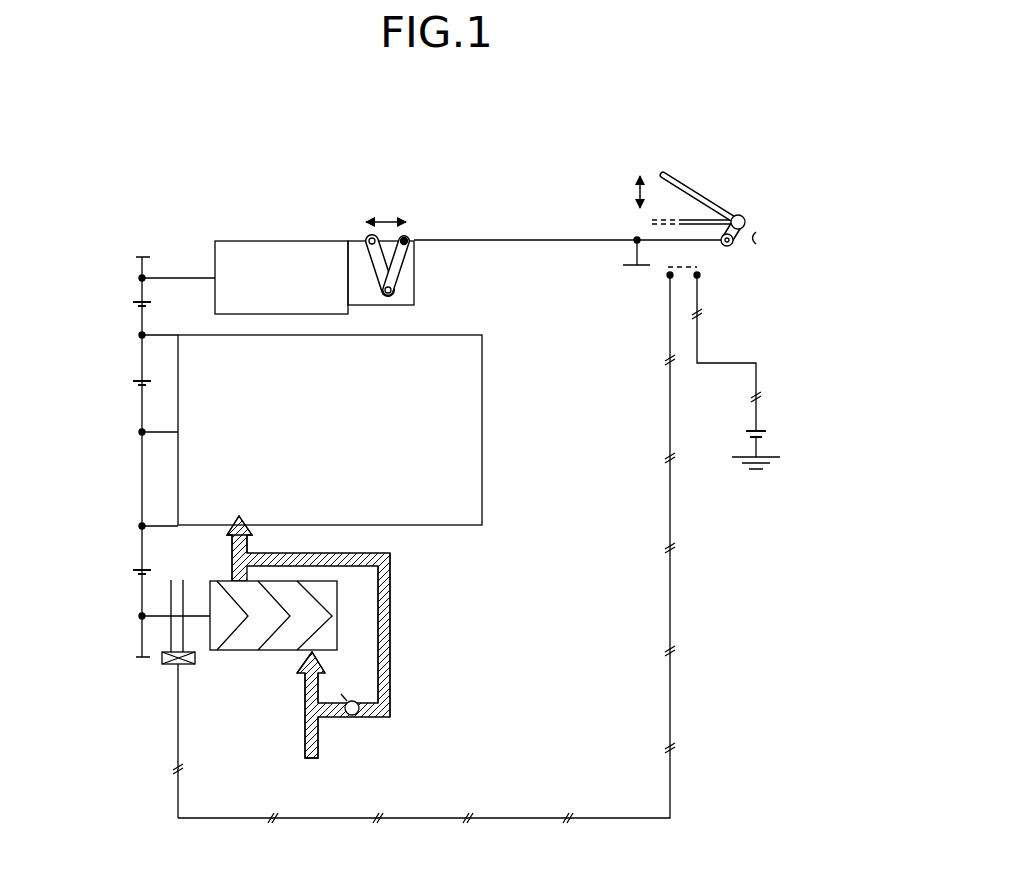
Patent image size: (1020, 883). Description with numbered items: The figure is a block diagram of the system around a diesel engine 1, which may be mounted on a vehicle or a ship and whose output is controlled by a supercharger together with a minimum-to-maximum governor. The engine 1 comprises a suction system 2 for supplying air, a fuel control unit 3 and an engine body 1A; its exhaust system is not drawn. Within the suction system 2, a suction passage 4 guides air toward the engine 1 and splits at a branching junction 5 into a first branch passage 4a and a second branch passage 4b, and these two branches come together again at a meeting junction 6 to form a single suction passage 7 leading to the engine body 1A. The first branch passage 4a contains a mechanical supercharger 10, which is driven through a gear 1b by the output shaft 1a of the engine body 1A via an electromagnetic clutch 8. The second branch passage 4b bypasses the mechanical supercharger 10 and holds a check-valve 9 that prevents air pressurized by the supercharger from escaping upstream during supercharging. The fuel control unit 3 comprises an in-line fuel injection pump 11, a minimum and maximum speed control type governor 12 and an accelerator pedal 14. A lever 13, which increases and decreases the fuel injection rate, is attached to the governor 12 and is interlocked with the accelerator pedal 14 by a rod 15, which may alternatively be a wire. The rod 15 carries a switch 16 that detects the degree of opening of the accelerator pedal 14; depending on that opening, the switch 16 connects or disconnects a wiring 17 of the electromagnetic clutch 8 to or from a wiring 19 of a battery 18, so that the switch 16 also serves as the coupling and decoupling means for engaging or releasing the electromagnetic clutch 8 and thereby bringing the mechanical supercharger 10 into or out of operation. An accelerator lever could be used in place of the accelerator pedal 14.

The diesel engine 1 is at (510, 500).
The engine body 1A is at (460, 448).
The output shaft 1a is at (162, 432).
The gear 1b is at (142, 545).
The suction system 2 is at (404, 600).
The fuel control unit 3 is at (264, 186).
The suction passage 4 is at (305, 745).
The first branch passage 4a is at (305, 690).
The second branch passage 4b is at (392, 655).
The branching junction 5 is at (305, 705).
The meeting junction 6 is at (232, 560).
The suction passage 7 is at (247, 555).
The electromagnetic clutch 8 is at (154, 676).
The check-valve 9 is at (352, 718).
The mechanical supercharger 10 is at (236, 646).
The in-line fuel injection pump 11 is at (237, 262).
The minimum and maximum speed control type governor 12 is at (360, 276).
The lever 13 is at (392, 270).
The accelerator pedal 14 is at (705, 193).
The rod 15 is at (495, 240).
The switch 16 is at (682, 267).
The wiring 17 is at (670, 378).
The battery 18 is at (770, 437).
The wiring 19 is at (726, 363).